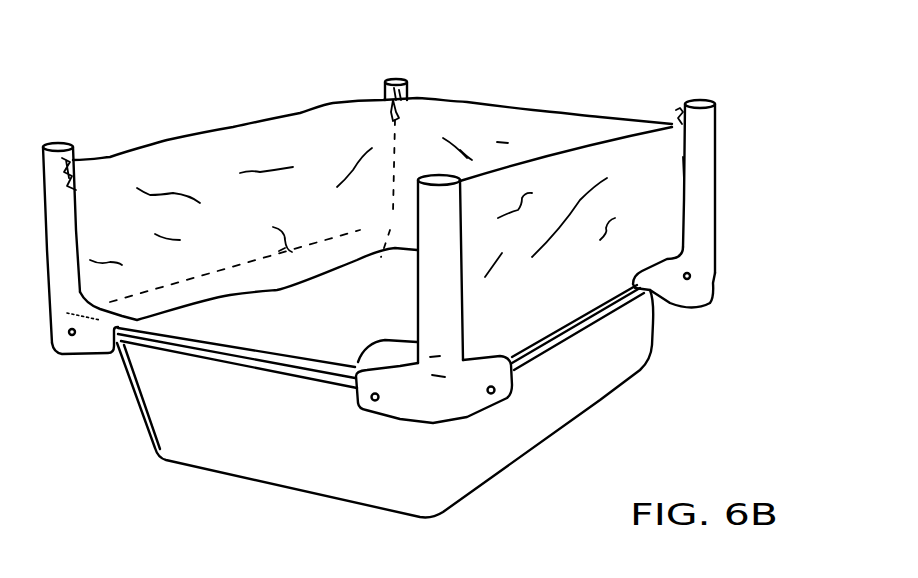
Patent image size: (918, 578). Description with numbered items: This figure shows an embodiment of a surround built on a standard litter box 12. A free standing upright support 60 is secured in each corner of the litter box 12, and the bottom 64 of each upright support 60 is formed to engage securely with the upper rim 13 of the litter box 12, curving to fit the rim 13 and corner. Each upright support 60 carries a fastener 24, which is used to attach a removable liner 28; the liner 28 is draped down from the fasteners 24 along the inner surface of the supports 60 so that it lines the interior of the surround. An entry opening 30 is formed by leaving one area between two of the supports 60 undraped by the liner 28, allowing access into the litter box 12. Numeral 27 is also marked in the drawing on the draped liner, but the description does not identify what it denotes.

The litter box 12 is at (683, 340).
The rim 13 is at (130, 340).
The fastener 24 is at (415, 100).
The liner fold line 27 is at (277, 290).
The removable liner 28 is at (540, 123).
The entry opening 30 is at (290, 340).
The upright support 60 is at (707, 163).
The bottom 64 is at (695, 310).